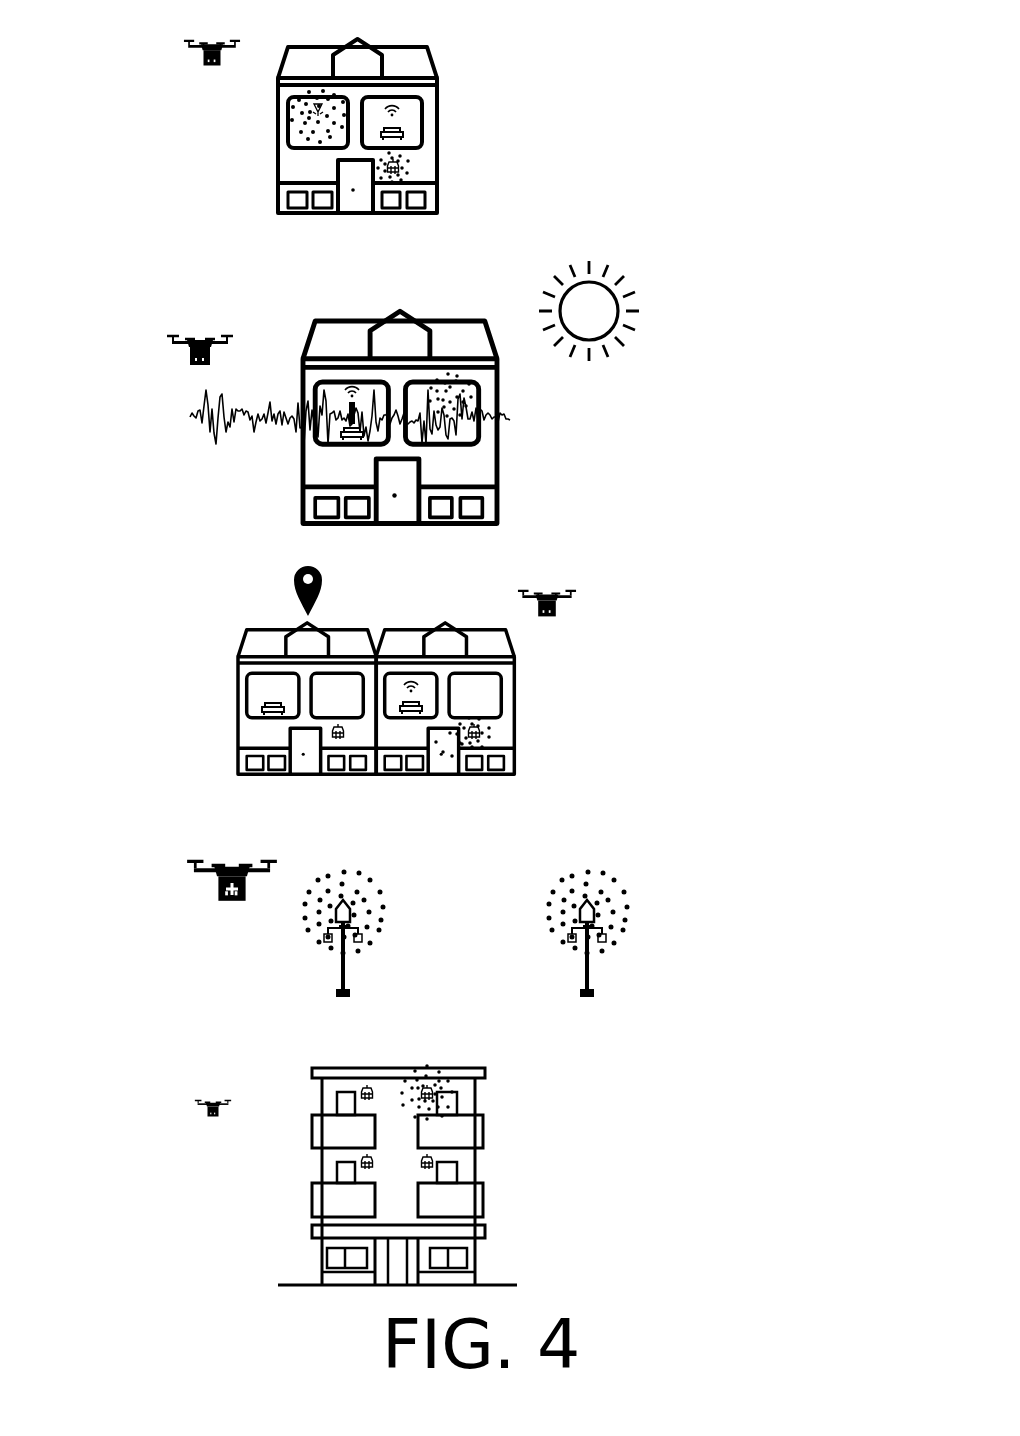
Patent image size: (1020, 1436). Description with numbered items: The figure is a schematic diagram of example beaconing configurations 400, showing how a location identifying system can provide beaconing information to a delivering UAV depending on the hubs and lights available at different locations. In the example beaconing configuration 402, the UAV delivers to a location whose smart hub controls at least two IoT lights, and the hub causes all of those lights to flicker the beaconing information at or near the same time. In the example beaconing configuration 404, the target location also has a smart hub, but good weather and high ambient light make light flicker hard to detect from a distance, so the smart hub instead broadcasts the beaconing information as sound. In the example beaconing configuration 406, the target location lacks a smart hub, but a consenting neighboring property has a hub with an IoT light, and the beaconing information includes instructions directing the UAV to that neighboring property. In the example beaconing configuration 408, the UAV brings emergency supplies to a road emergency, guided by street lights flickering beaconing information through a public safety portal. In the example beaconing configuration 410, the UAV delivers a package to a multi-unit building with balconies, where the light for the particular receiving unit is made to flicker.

The example beaconing configurations 400 is at (822, 28).
The example beaconing configuration 402 is at (246, 123).
The example beaconing configuration 404 is at (347, 392).
The example beaconing configuration 406 is at (315, 663).
The example beaconing configuration 408 is at (341, 905).
The example beaconing configuration 410 is at (286, 1175).